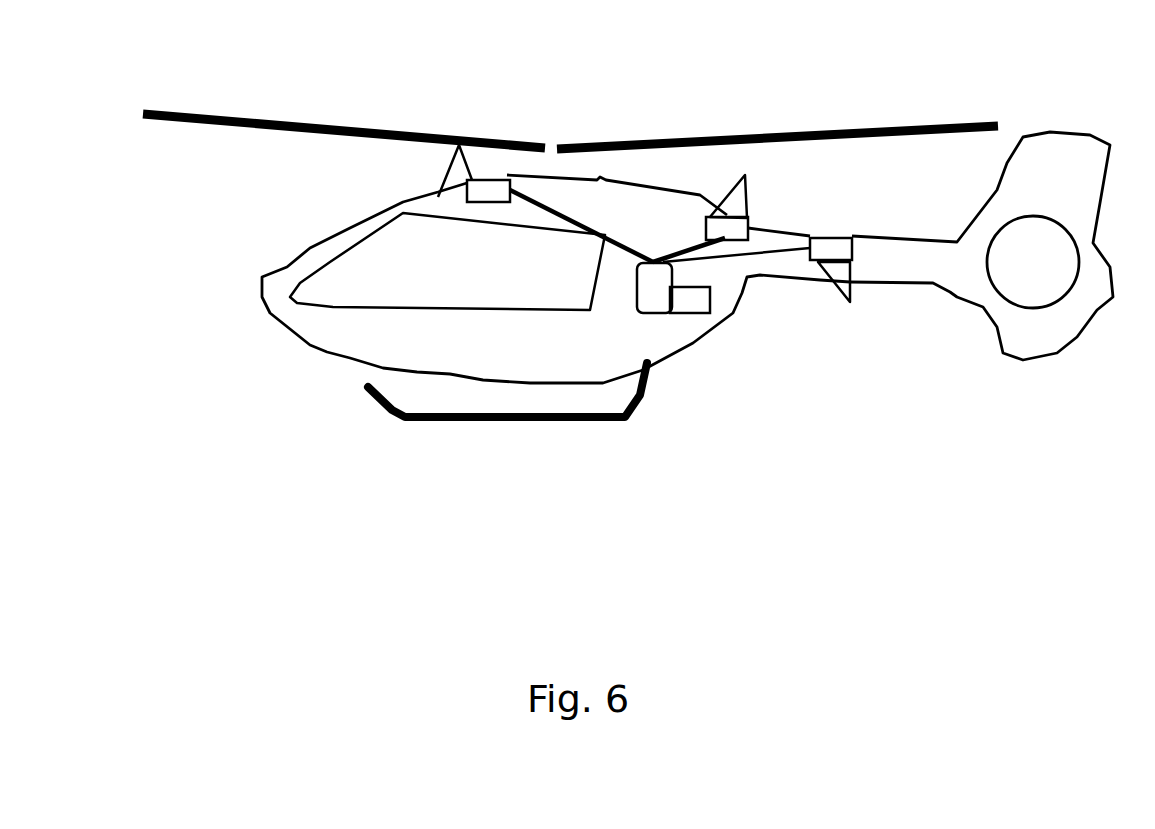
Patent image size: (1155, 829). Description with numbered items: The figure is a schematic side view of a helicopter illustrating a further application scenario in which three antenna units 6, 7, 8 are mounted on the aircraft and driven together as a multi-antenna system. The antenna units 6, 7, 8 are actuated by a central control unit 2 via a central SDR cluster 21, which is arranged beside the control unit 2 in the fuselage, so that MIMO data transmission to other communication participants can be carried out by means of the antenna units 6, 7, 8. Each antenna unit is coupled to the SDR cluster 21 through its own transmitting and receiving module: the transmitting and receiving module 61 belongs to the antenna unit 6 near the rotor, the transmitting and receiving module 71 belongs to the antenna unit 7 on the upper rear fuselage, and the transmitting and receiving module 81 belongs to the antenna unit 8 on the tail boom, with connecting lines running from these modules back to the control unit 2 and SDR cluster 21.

The central control unit 2 is at (710, 298).
The central SDR cluster 21 is at (653, 317).
The antenna unit 6 is at (445, 163).
The transmitting and receiving module 61 is at (487, 180).
The antenna unit 7 is at (727, 195).
The transmitting and receiving module 71 is at (753, 225).
The antenna unit 8 is at (832, 280).
The transmitting and receiving module 81 is at (855, 238).